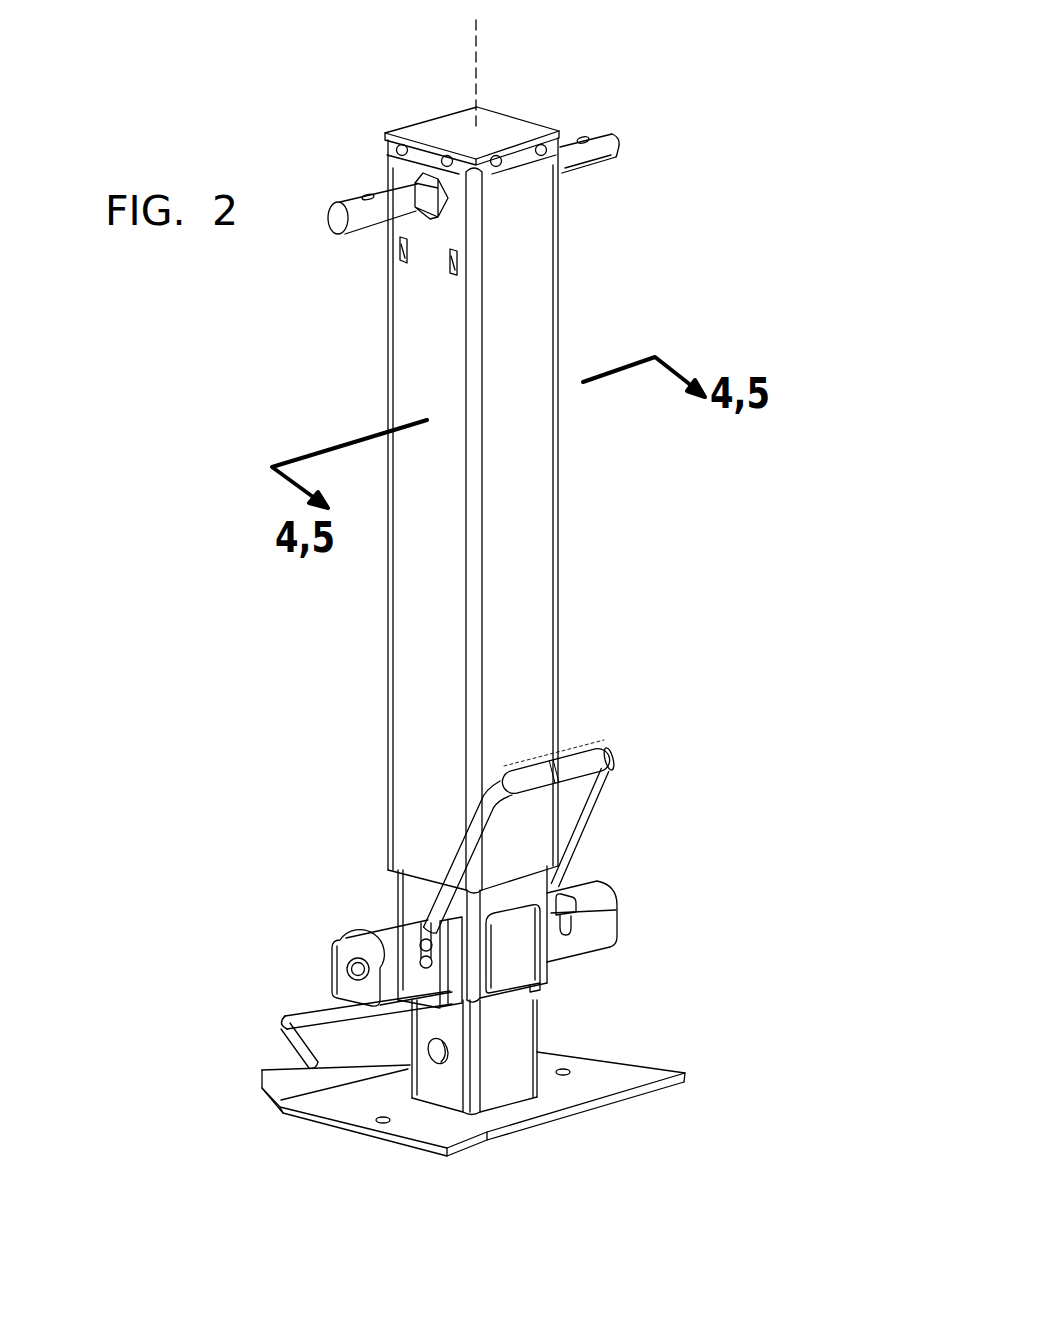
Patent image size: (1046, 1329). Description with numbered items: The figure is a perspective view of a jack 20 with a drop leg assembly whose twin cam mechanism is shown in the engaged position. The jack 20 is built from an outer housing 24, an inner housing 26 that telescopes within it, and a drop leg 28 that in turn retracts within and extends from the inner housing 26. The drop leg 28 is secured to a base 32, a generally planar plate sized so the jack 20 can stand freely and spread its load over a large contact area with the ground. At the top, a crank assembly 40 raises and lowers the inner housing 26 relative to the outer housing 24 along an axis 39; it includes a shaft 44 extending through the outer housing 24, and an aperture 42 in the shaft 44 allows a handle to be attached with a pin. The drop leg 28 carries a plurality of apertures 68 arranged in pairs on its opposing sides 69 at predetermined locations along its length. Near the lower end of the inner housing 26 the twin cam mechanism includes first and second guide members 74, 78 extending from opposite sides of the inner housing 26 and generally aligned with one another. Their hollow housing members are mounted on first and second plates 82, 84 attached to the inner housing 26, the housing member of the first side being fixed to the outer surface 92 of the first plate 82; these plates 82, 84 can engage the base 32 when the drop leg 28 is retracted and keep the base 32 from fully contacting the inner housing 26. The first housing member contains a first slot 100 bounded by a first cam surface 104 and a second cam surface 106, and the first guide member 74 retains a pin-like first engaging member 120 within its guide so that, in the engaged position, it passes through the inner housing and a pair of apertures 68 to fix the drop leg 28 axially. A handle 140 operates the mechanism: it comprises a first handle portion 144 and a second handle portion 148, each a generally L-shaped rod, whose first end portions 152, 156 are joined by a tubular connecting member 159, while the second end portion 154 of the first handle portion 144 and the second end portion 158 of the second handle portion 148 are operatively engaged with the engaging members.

The jack 20 is at (598, 495).
The outer housing 24 is at (425, 408).
The inner housing 26 is at (417, 895).
The drop leg 28 is at (517, 1048).
The base 32 is at (610, 1082).
The axis 39 is at (476, 62).
The crank assembly 40 is at (597, 197).
The aperture 42 is at (585, 138).
The shaft 44 is at (610, 148).
The apertures 68 is at (437, 1027).
The sides 69 is at (443, 1060).
The first guide member 74 is at (318, 974).
The second guide member 78 is at (640, 917).
The first plate 82 is at (288, 1033).
The second plate 84 is at (550, 972).
The outer surface 92 is at (458, 1015).
The first slot 100 is at (402, 920).
The first cam surface 104 is at (281, 1017).
The second cam surface 106 is at (430, 950).
The first engaging member 120 is at (350, 962).
The handle 140 is at (534, 778).
The first handle portion 144 is at (460, 860).
The second handle portion 148 is at (590, 822).
The first end portion 152 is at (528, 767).
The second end portion 154 is at (427, 915).
The first end portion 156 is at (610, 757).
The second end portion 158 is at (573, 877).
The connecting member 159 is at (600, 748).